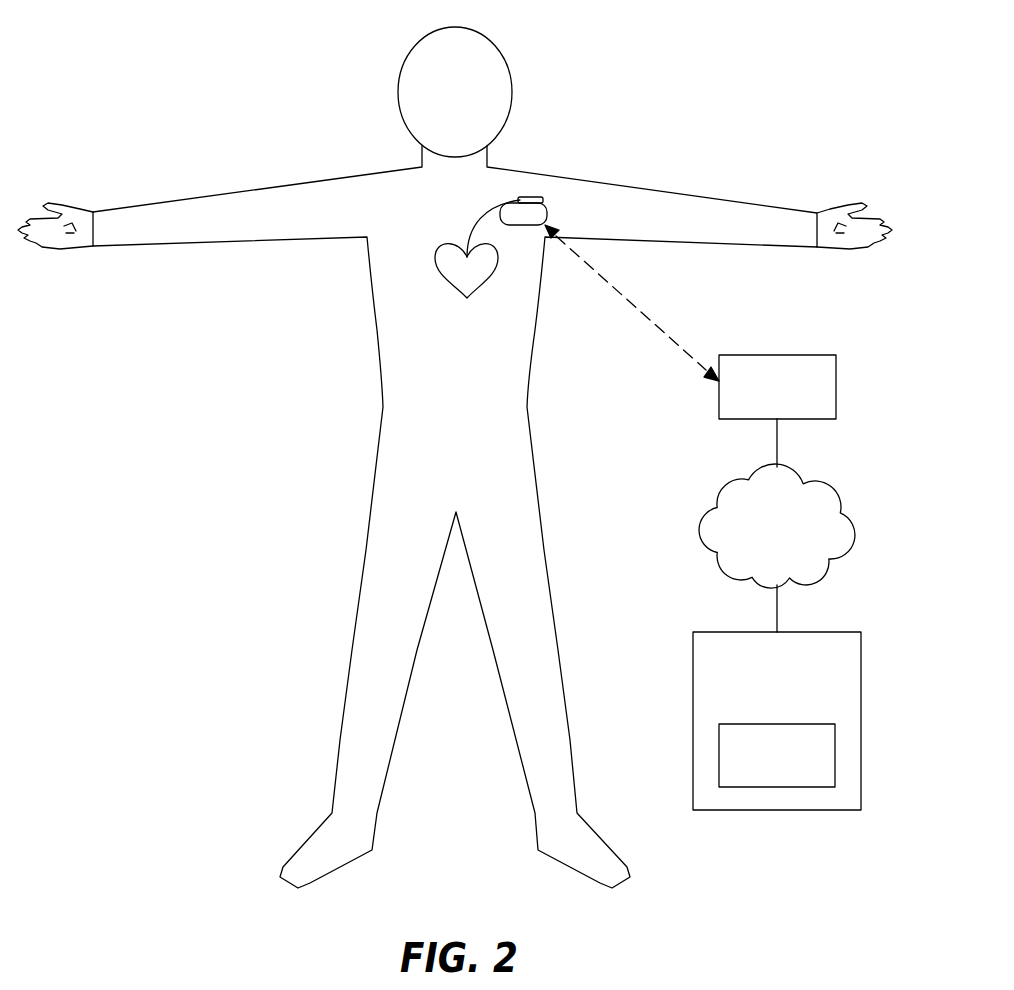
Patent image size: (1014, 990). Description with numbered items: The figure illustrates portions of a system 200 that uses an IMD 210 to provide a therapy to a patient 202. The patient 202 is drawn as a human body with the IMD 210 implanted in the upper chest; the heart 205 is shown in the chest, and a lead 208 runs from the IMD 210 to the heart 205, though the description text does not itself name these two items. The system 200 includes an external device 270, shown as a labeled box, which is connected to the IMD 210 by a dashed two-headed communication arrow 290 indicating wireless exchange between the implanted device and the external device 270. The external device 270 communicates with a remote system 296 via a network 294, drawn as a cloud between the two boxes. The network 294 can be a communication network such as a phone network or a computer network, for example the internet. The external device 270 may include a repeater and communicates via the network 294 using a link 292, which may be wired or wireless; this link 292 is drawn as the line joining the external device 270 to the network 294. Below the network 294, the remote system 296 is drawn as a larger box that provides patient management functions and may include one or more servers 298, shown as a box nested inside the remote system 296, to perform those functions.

The system 200 is at (781, 52).
The patient 202 is at (373, 322).
The heart 205 is at (447, 283).
The lead 208 is at (480, 212).
The IMD 210 is at (527, 198).
The communication link 290 is at (623, 298).
The external device 270 is at (777, 355).
The link 292 is at (778, 442).
The network 294 is at (854, 522).
The remote system 296 is at (803, 632).
The servers 298 is at (778, 724).